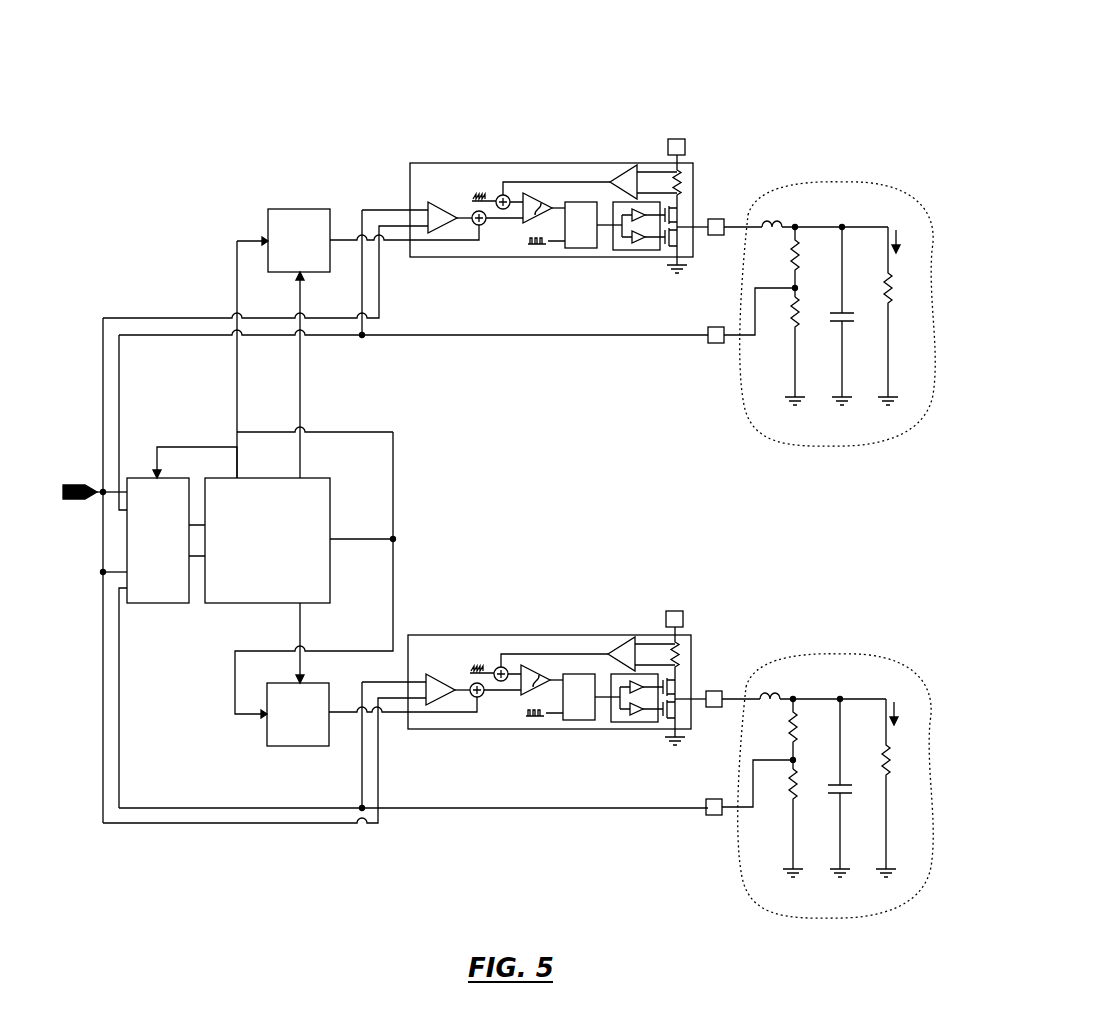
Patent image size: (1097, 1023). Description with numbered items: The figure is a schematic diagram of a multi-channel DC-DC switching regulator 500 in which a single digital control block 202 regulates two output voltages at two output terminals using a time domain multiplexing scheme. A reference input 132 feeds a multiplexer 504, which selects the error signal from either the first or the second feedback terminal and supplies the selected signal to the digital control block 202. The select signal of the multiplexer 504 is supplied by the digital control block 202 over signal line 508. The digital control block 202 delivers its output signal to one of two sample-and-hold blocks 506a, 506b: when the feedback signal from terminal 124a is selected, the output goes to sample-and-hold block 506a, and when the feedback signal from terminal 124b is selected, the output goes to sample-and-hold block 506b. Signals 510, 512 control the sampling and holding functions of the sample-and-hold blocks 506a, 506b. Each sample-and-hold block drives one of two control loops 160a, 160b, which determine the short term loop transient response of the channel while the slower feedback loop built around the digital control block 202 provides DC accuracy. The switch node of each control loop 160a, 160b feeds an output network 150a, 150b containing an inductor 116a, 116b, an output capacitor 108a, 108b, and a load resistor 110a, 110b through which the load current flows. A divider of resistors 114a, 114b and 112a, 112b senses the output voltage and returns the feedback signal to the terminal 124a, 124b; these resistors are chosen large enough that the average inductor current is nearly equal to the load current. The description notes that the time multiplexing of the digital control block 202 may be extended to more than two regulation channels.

The regulator 500 is at (623, 115).
The reference voltage input 132 is at (79, 482).
The multiplexer 504 is at (176, 477).
The digital control block 202 is at (333, 478).
The signal line 508 is at (168, 447).
The signal 512 is at (303, 406).
The signal 510 is at (303, 638).
The sample-and-hold block 506a is at (339, 208).
The sample-and-hold block 506b is at (338, 681).
The control loop 160a is at (505, 166).
The control loop 160b is at (557, 668).
The terminal 124a is at (706, 346).
The terminal 124b is at (719, 810).
The first output filter and load network 150a is at (872, 182).
The second output filter and load network 150b is at (836, 769).
The inductor 116a is at (781, 200).
The inductor 116b is at (785, 662).
The resistor 114a is at (806, 240).
The resistor 114b is at (802, 715).
The resistor 112a is at (784, 320).
The resistor 112b is at (774, 823).
The output capacitor 108a is at (826, 331).
The output capacitor 108b is at (837, 788).
The load resistor 110a is at (889, 300).
The load resistor 110b is at (890, 779).